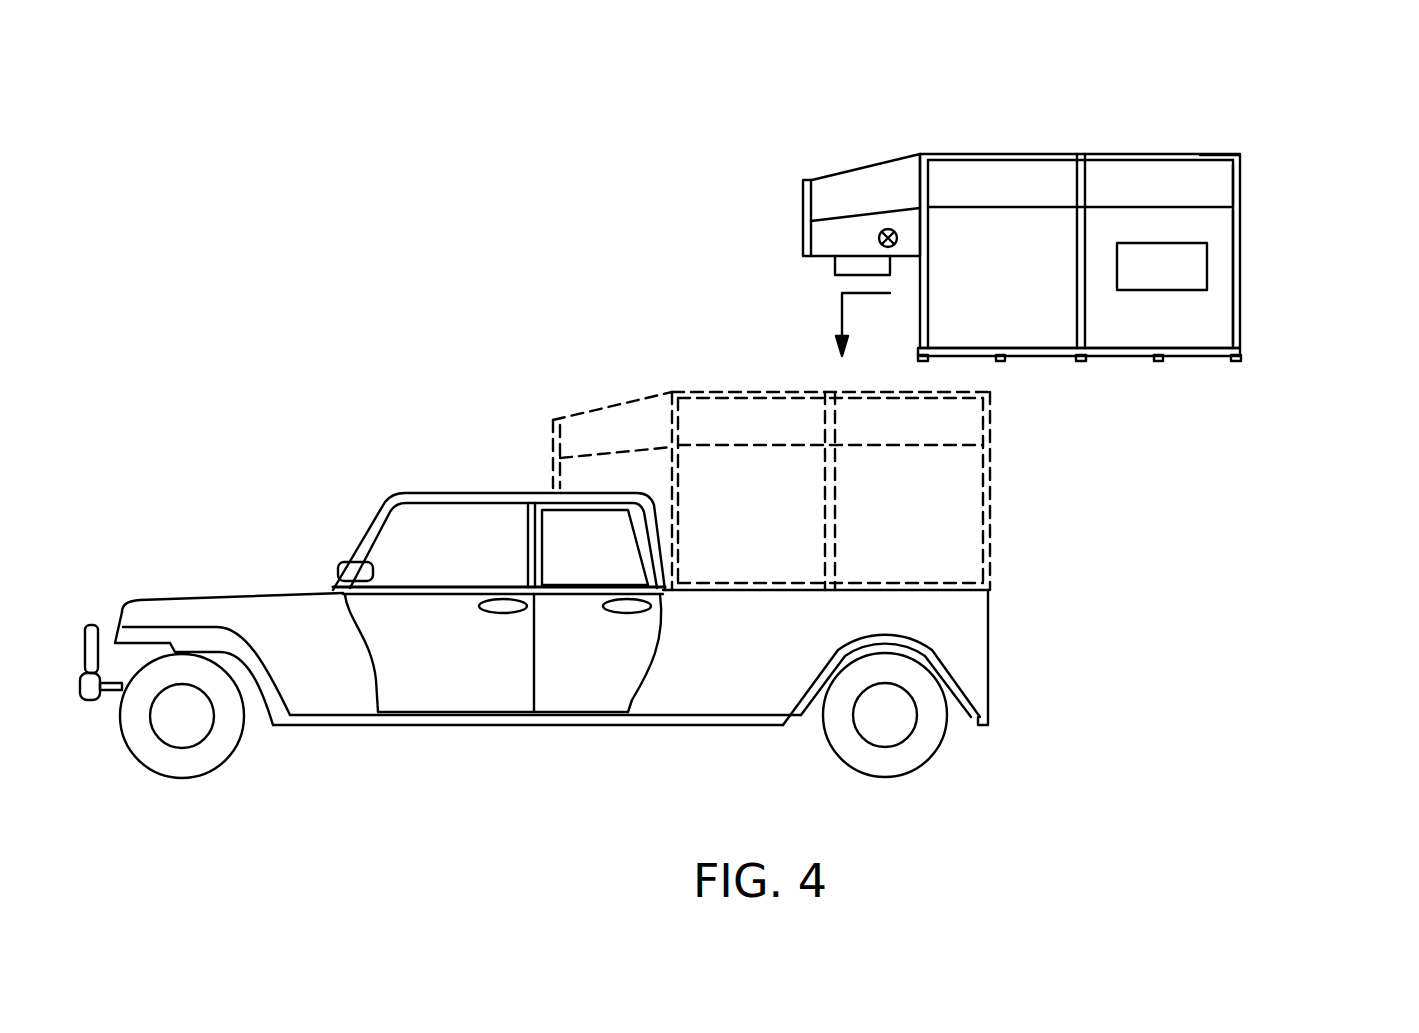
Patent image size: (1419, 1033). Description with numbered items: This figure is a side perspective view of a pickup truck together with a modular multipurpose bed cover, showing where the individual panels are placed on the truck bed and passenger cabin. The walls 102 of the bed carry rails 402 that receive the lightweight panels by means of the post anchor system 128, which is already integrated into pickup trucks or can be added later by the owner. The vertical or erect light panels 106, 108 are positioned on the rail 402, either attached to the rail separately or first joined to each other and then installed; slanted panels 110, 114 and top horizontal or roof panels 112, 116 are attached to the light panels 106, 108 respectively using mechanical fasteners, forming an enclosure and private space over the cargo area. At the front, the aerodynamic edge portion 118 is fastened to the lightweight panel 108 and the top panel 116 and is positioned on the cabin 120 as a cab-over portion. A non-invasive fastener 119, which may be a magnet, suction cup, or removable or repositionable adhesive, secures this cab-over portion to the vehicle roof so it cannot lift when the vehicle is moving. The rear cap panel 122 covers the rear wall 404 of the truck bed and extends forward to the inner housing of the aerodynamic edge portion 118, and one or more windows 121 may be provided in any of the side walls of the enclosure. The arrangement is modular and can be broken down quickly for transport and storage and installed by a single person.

The walls 102 is at (748, 651).
The light panel 106 is at (1215, 278).
The light panel 108 is at (990, 303).
The slanted panel 110 is at (1210, 185).
The top horizontal panel 112 is at (1213, 160).
The slanted panel 114 is at (983, 200).
The top horizontal panel 116 is at (988, 158).
The aerodynamic edge portion 118 is at (856, 169).
The non-invasive fastener 119 is at (840, 268).
The cabin 120 is at (490, 478).
The window 121 is at (1187, 268).
The rear cap panel 122 is at (665, 510).
The post anchor system 128 is at (1000, 361).
The rail 402 is at (937, 592).
The rear wall 404 is at (628, 712).